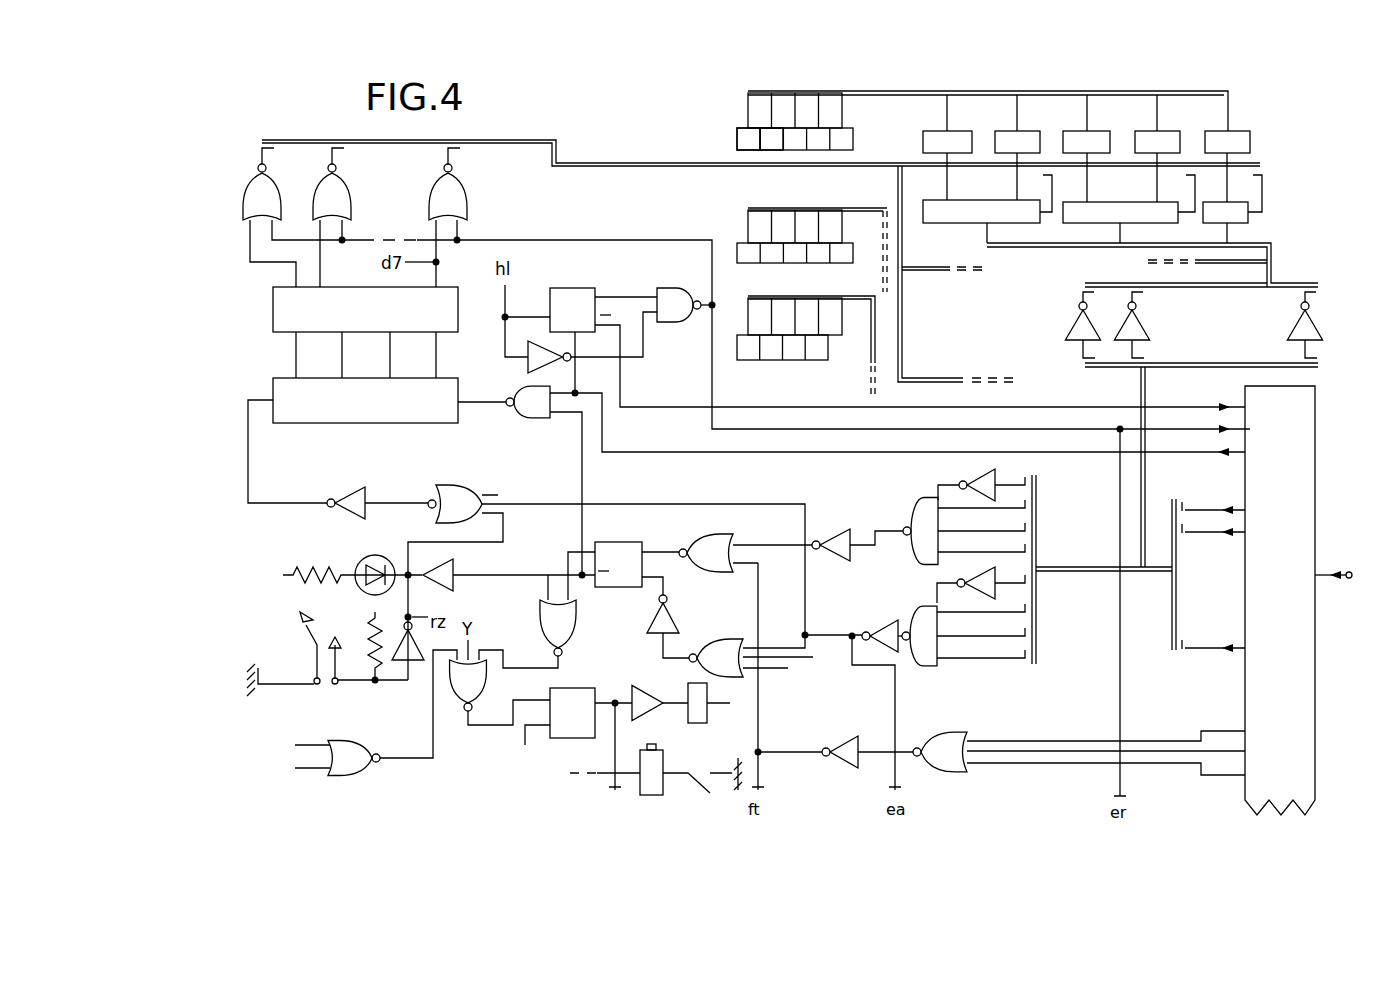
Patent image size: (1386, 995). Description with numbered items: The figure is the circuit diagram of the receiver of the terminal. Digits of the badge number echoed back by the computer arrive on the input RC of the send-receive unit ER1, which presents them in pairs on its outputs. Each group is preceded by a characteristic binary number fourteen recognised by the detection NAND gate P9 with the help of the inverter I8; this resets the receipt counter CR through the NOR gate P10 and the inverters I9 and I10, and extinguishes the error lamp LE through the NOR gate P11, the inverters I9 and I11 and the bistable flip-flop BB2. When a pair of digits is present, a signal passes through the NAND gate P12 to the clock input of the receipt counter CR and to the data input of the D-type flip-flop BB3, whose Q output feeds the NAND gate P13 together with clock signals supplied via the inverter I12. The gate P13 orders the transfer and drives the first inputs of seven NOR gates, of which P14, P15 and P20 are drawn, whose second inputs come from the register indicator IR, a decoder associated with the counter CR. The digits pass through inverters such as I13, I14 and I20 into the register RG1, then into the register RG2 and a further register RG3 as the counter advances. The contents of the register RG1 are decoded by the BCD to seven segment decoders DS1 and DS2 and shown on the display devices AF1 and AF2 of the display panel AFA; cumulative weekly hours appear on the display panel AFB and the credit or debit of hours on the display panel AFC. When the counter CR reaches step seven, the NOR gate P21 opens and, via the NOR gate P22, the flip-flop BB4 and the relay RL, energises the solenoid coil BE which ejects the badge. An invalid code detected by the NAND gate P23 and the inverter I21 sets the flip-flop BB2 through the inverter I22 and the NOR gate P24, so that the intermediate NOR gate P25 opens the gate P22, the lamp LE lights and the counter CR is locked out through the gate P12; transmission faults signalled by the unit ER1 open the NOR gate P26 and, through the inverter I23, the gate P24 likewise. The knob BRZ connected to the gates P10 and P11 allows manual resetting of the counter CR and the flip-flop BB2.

The NOR gate P14 is at (268, 186).
The NOR gate P15 is at (345, 186).
The NOR gate P20 is at (460, 186).
The register indicator IR is at (273, 298).
The receipt counter CR is at (342, 420).
The D-type bistable flip-flop BB3 is at (568, 296).
The inverter I12 is at (530, 360).
The NAND gate P13 is at (672, 320).
The NAND gate P12 is at (536, 412).
The inverter I10 is at (350, 488).
The NOR gate P10 is at (458, 488).
The error lamp LE is at (366, 556).
The knob BRZ is at (305, 650).
The NOR gate P21 is at (370, 770).
The NOR gate P22 is at (462, 716).
The intermediate NOR gate P25 is at (552, 645).
The bistable flip-flop BB4 is at (562, 696).
The relay RL is at (707, 714).
The solenoid coil BE is at (660, 782).
The bistable flip-flop BB2 is at (620, 553).
The NOR gate P24 is at (715, 546).
The inverter I11 is at (652, 620).
The NOR gate P11 is at (718, 656).
The inverter I22 is at (832, 530).
The inverter I9 is at (886, 626).
The inverter I23 is at (838, 766).
The NOR gate P26 is at (936, 742).
The inverter I21 is at (975, 484).
The NAND gate P23 is at (918, 518).
The inverter I8 is at (958, 580).
The detection NAND gate P9 is at (915, 655).
The send-receive unit ER1 is at (1245, 561).
The receiver input RC is at (1298, 600).
The inverter I13 is at (1066, 330).
The inverter I14 is at (1146, 328).
The inverter I20 is at (1320, 328).
The display panel AFA is at (858, 139).
The display device AF1 is at (734, 138).
The display device AF2 is at (768, 150).
The display panel AFB is at (736, 248).
The display panel AFC is at (735, 352).
The BCD to seven segment decoder DS1 is at (962, 131).
The BCD to seven segment decoder DS2 is at (1028, 131).
The register RG1 is at (958, 208).
The register RG2 is at (1095, 208).
The register RG3 is at (1247, 219).